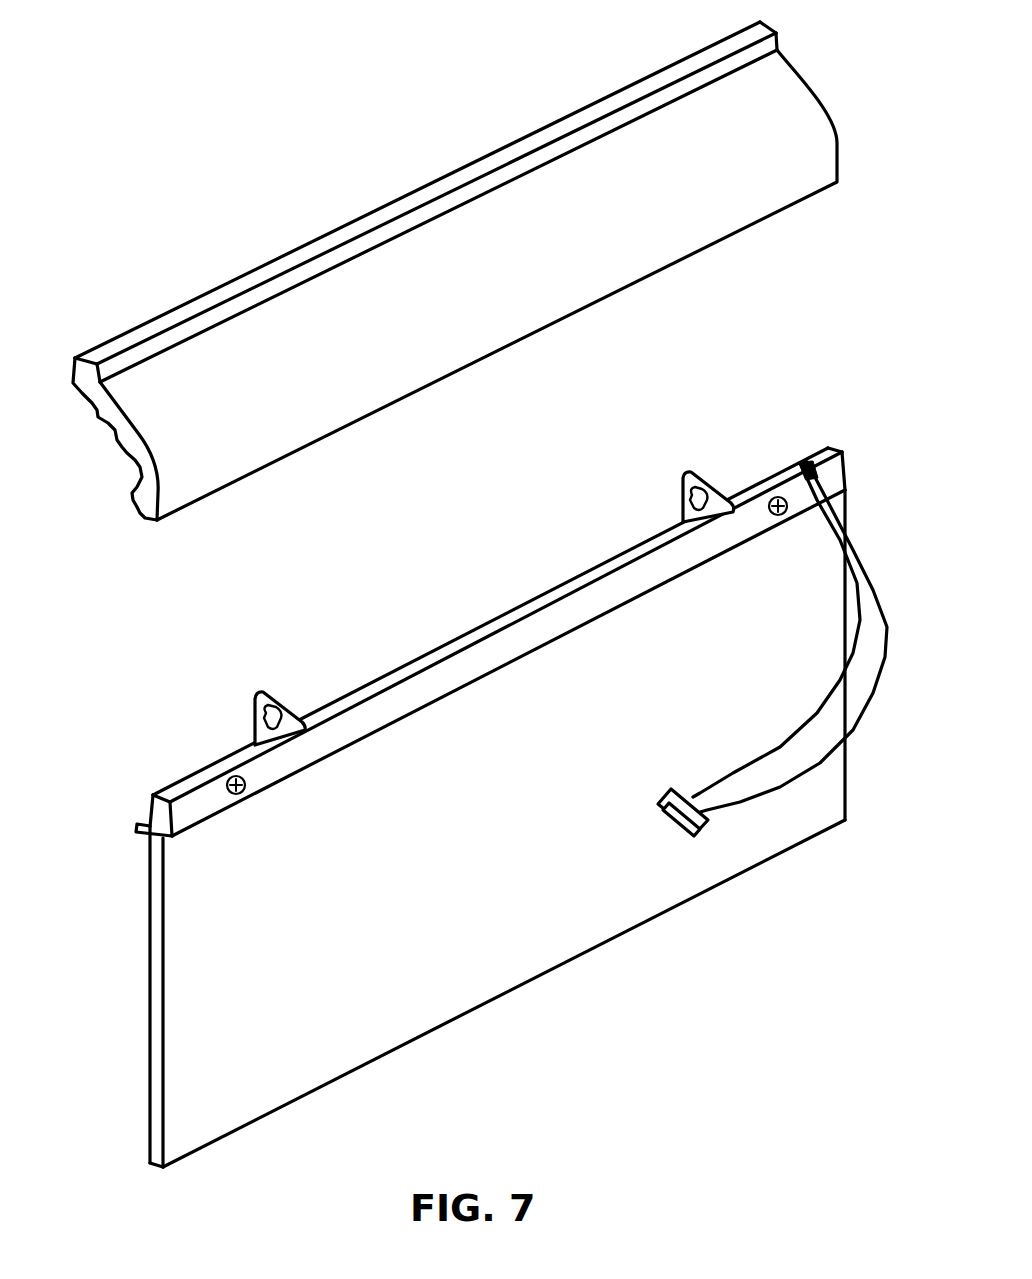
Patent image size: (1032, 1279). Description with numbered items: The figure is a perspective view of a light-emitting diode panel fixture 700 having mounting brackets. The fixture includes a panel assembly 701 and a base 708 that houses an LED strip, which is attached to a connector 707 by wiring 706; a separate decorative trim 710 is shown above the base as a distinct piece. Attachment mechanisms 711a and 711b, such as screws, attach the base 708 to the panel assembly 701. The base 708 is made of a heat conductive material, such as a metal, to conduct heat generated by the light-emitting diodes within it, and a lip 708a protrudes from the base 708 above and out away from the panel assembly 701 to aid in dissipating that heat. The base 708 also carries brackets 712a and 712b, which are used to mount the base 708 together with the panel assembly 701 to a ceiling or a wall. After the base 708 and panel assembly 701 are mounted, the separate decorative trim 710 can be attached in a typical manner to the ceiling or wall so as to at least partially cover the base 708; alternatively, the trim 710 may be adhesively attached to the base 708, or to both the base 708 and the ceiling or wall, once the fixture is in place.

The light-emitting diode panel fixture 700 is at (216, 179).
The panel assembly 701 is at (527, 883).
The wiring 706 is at (857, 700).
The connector 707 is at (702, 822).
The base 708 is at (833, 472).
The lip 708a is at (137, 827).
The separate decorative trim 710 is at (758, 100).
The attachment mechanism 711a is at (228, 775).
The attachment mechanism 711b is at (773, 494).
The bracket 712a is at (283, 716).
The bracket 712b is at (681, 506).